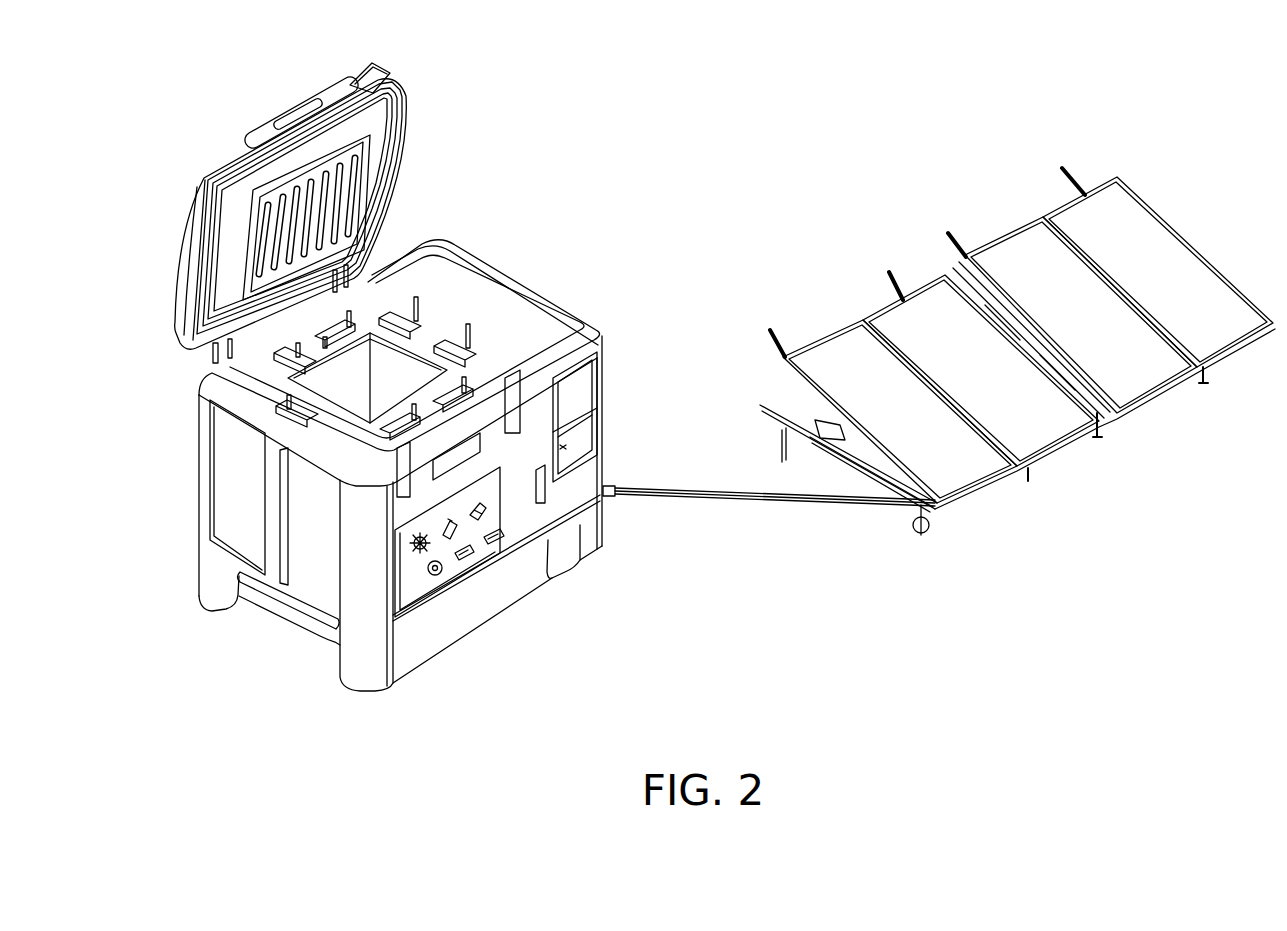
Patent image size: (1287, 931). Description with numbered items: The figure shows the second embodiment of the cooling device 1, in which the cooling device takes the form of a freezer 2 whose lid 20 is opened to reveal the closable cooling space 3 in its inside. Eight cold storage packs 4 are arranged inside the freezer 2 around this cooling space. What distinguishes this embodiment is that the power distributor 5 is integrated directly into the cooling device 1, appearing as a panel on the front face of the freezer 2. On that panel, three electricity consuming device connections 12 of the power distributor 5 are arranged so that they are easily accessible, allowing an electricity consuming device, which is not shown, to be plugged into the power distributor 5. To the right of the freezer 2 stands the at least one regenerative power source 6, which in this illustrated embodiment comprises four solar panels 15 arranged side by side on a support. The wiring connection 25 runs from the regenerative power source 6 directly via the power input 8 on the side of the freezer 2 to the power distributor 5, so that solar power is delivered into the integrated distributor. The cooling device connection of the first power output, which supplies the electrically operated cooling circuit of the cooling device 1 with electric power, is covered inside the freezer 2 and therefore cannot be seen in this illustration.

The cooling device 1 is at (530, 188).
The freezer 2 is at (300, 534).
The closable cooling space 3 is at (330, 388).
The cold storage packs 4 is at (330, 325).
The power distributor 5 is at (412, 575).
The regenerative power source 6 is at (878, 222).
The power input 8 is at (618, 490).
The electricity consuming device connections 12 is at (497, 540).
The solar panels 15 is at (892, 427).
The lid 20 is at (373, 147).
The wiring connection 25 is at (753, 545).